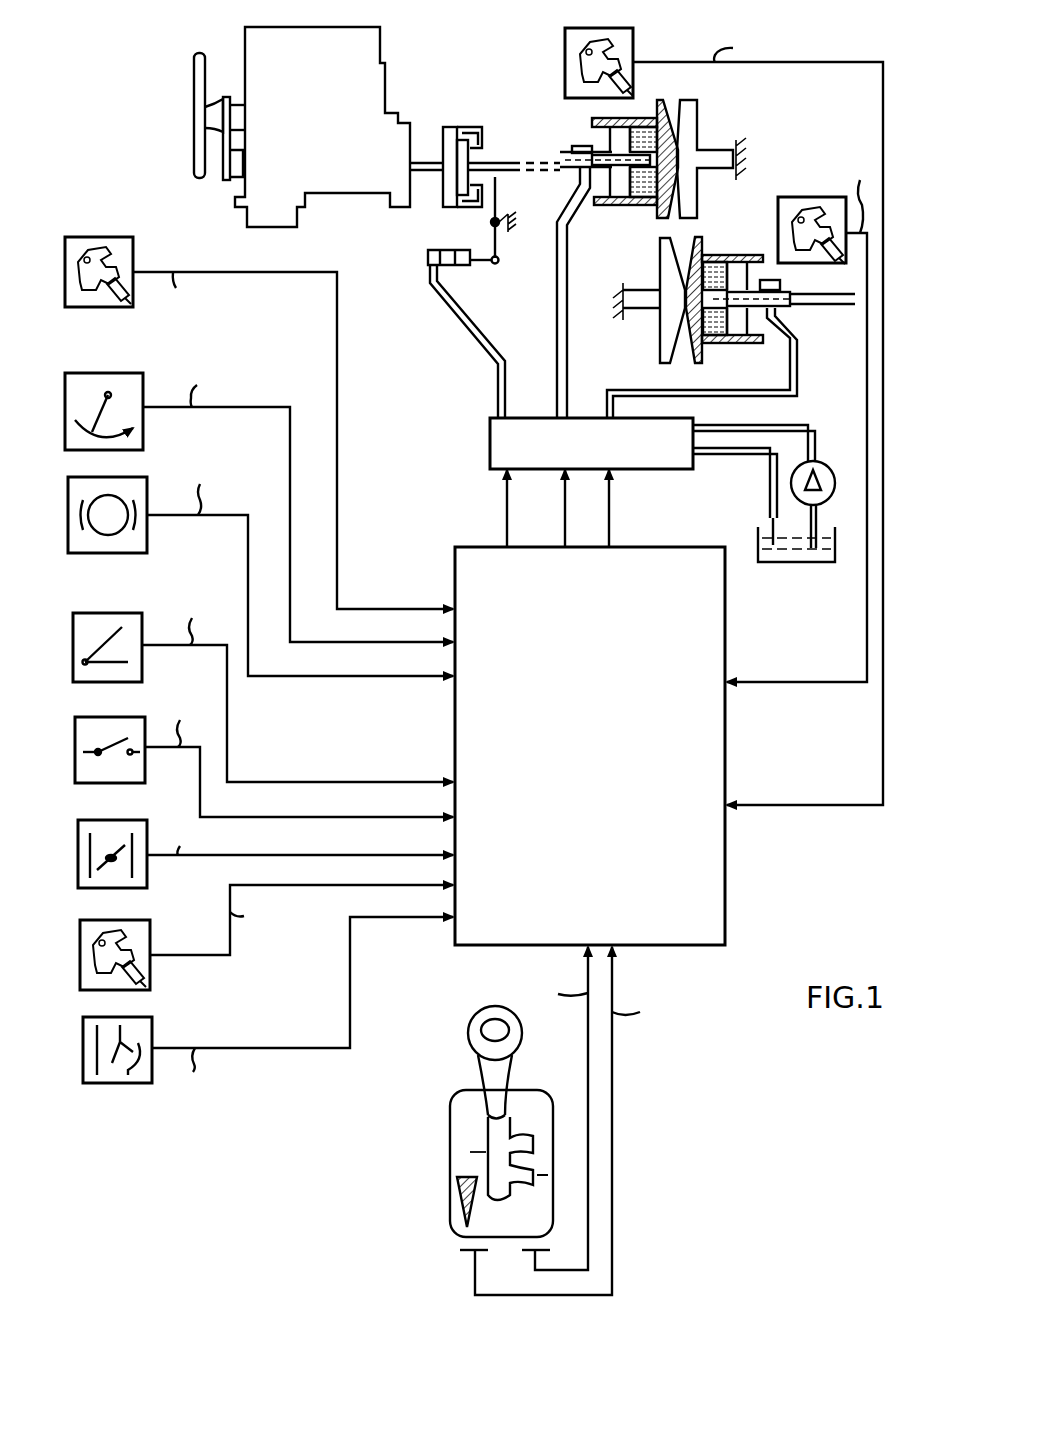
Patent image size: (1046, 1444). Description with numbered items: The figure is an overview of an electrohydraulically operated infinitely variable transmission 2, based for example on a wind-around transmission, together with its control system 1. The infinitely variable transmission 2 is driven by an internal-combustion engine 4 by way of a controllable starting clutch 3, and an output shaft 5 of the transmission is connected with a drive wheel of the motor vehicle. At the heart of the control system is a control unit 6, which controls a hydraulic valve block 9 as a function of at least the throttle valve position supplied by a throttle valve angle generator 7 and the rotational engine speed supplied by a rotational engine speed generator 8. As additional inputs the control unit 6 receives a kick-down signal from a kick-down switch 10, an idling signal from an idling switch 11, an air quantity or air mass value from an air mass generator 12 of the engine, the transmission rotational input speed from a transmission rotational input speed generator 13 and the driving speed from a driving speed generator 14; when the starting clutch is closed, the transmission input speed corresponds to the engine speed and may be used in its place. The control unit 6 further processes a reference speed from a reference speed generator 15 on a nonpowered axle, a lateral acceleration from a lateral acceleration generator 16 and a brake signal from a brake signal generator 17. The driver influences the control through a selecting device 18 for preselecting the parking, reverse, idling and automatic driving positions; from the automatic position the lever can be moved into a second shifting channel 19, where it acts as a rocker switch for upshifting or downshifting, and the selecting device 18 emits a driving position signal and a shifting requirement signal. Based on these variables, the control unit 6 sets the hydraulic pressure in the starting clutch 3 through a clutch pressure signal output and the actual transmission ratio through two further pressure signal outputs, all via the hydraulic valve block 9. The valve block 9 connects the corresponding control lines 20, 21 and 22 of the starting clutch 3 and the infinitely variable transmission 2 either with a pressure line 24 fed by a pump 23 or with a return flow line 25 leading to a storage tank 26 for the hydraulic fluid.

The control system 1 is at (634, 746).
The infinitely variable transmission 2 is at (775, 135).
The starting clutch 3 is at (482, 115).
The internal-combustion engine 4 is at (387, 80).
The output shaft 5 is at (825, 302).
The control unit 6 is at (725, 630).
The throttle valve angle generator 7 is at (78, 850).
The rotational engine speed generator 8 is at (80, 958).
The hydraulic valve block 9 is at (490, 448).
The kick-down switch 10 is at (73, 645).
The idling switch 11 is at (75, 742).
The air quantity or air mass generator 12 is at (83, 1063).
The transmission rotational input speed generator 13 is at (633, 45).
The driving speed generator 14 is at (810, 197).
The reference speed generator 15 is at (65, 297).
The lateral acceleration generator 16 is at (65, 420).
The brake signal generator 17 is at (68, 520).
The selecting device 18 is at (541, 1121).
The second shifting channel 19 is at (533, 1183).
The control line 20 is at (478, 330).
The control line 21 is at (568, 275).
The control line 22 is at (628, 388).
The pump 23 is at (832, 475).
The pressure line 24 is at (812, 440).
The return flow line 25 is at (768, 480).
The storage tank 26 is at (805, 562).